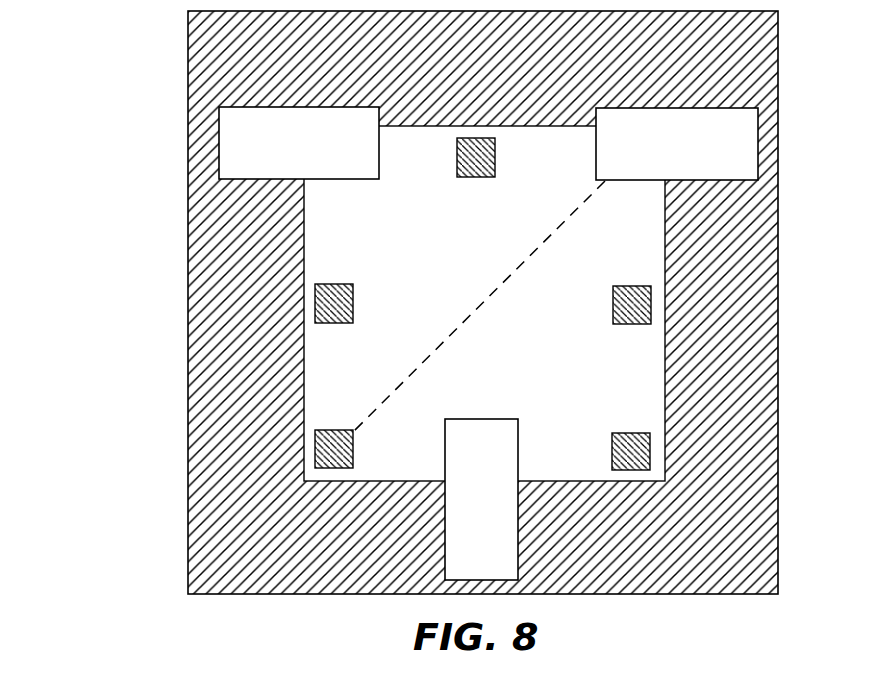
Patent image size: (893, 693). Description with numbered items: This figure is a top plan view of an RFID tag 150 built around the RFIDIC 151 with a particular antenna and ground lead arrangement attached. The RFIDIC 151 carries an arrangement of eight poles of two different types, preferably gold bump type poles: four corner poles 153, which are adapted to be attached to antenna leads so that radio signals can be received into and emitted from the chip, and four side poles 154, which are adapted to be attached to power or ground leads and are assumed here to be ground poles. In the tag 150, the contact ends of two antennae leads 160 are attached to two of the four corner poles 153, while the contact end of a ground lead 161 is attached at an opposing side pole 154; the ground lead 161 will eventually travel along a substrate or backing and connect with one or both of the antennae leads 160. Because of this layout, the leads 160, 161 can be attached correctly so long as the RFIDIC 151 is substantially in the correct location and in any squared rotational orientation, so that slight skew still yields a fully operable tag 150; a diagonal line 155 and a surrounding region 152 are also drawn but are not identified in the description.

The RFID tag 150 is at (155, 40).
The RFIDIC 151 is at (397, 300).
The hatched frame / substrate region 152 is at (210, 430).
The corner pole 153 is at (618, 447).
The side pole 154 is at (622, 310).
The diagonal dashed line / section line 155 is at (530, 256).
The antennae lead 160 is at (281, 154).
The ground lead 161 is at (464, 526).